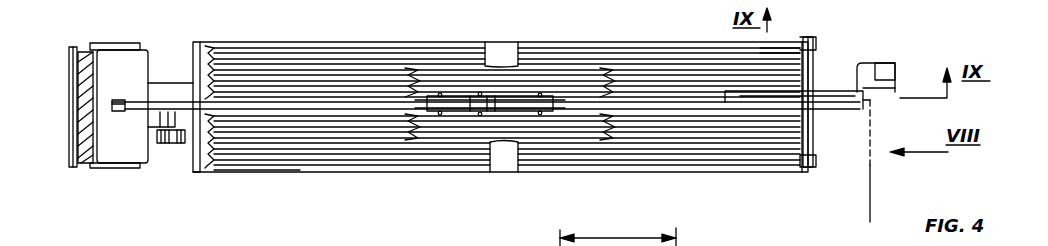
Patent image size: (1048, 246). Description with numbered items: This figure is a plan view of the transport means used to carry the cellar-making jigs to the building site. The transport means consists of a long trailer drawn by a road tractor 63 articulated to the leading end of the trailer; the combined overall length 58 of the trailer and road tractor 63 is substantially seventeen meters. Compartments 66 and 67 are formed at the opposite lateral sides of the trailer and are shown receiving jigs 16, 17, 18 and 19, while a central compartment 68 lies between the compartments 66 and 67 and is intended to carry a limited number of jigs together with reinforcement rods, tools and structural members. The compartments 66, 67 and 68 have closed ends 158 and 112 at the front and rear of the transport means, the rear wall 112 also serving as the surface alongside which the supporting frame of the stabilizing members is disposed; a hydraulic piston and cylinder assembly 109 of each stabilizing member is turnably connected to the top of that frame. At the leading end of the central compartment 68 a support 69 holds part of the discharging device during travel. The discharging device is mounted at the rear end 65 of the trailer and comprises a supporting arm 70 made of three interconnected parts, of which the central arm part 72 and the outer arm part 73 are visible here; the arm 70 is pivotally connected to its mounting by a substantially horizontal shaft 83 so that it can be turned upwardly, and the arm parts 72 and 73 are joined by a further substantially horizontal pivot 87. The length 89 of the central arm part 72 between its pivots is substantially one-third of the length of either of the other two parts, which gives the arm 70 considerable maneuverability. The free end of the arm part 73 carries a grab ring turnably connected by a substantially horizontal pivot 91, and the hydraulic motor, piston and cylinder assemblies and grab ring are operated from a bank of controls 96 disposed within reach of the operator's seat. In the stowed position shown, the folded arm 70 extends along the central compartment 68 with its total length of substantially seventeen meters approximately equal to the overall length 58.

The jig 16 is at (390, 170).
The jig 17 is at (306, 170).
The jig 18 is at (375, 60).
The jig 19 is at (430, 70).
The combined overall length 58 is at (870, 208).
The road tractor 63 is at (118, 165).
The rear end 65 is at (812, 135).
The compartment 66 is at (200, 50).
The compartment 67 is at (197, 172).
The central compartment 68 is at (193, 118).
The support 69 is at (195, 86).
The supporting arm 70 is at (842, 92).
The arm part 72 is at (510, 95).
The arm part 73 is at (132, 100).
The horizontal shaft 83 is at (860, 108).
The pivot 87 is at (542, 242).
The length 89 is at (626, 240).
The pivot 91 is at (118, 112).
The bank of controls 96 is at (876, 78).
The hydraulic piston and cylinder assembly 109 is at (810, 68).
The rear wall 112 is at (796, 170).
The closed end 158 is at (190, 150).